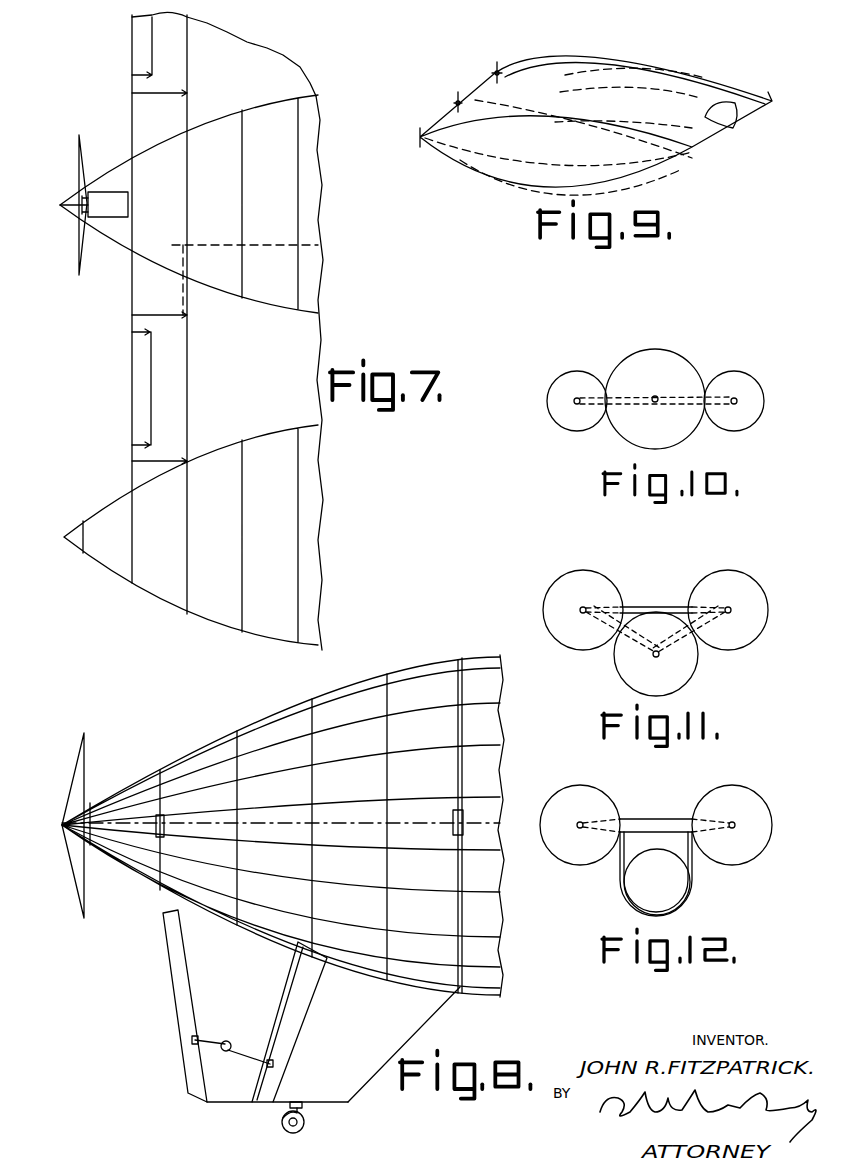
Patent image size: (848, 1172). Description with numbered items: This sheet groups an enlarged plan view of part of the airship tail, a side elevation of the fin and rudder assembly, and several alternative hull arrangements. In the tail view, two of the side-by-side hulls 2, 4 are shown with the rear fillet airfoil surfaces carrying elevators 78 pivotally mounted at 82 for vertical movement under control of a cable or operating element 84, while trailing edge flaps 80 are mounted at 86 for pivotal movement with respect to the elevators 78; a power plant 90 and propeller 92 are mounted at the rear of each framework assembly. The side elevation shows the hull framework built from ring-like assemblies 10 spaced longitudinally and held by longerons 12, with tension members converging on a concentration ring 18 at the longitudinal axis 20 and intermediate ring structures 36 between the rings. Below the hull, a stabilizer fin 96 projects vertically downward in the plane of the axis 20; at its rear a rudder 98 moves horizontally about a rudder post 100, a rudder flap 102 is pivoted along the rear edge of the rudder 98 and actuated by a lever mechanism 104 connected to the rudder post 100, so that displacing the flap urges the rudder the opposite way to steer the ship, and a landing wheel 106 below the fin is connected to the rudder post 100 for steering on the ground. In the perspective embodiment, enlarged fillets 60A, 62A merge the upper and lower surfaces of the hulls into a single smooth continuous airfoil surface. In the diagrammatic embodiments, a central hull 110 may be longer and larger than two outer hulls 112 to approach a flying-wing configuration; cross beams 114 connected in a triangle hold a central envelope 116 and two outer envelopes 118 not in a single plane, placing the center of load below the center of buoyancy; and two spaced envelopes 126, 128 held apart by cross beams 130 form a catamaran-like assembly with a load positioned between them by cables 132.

In FIG. 7, the hull 2 is at (328, 534).
In FIG. 7, the hull 4 is at (328, 231).
In FIG. 7, the elevator 78 is at (200, 383).
In FIG. 7, the trailing edge flap 80 is at (143, 390).
In FIG. 7, the pivot mounting 82 is at (200, 315).
In FIG. 7, the operating element 84 is at (265, 244).
In FIG. 7, the flap mounting 86 is at (152, 443).
In FIG. 7, the power plant 90 is at (128, 204).
In FIG. 7, the propeller 92 is at (80, 165).
In FIG. 8, the propeller 92 is at (86, 770).
In FIG. 9, the fillet 60A is at (747, 103).
In FIG. 9, the fillet 62A is at (455, 120).
In FIG. 10, the central hull 110 is at (665, 360).
In FIG. 10, the outer hull 112 is at (733, 375).
In FIG. 11, the cross beam 114 is at (683, 645).
In FIG. 11, the central envelope 116 is at (622, 666).
In FIG. 11, the outer envelope 118 is at (745, 580).
In FIG. 12, the envelope 126 is at (577, 795).
In FIG. 12, the envelope 128 is at (760, 802).
In FIG. 12, the cross beam 130 is at (657, 818).
In FIG. 12, the load cables 132 is at (696, 868).
In FIG. 8, the ring-like assembly 10 is at (458, 727).
In FIG. 8, the longeron 12 is at (366, 797).
In FIG. 8, the concentration ring 18 is at (456, 832).
In FIG. 8, the longitudinal axis 20 is at (370, 822).
In FIG. 8, the intermediate ring structure 36 is at (387, 870).
In FIG. 8, the stabilizer fin 96 is at (425, 1016).
In FIG. 8, the rudder 98 is at (235, 1085).
In FIG. 8, the rudder post 100 is at (296, 990).
In FIG. 8, the rudder flap 102 is at (176, 975).
In FIG. 8, the lever mechanism 104 is at (233, 1042).
In FIG. 8, the landing wheel 106 is at (285, 1124).